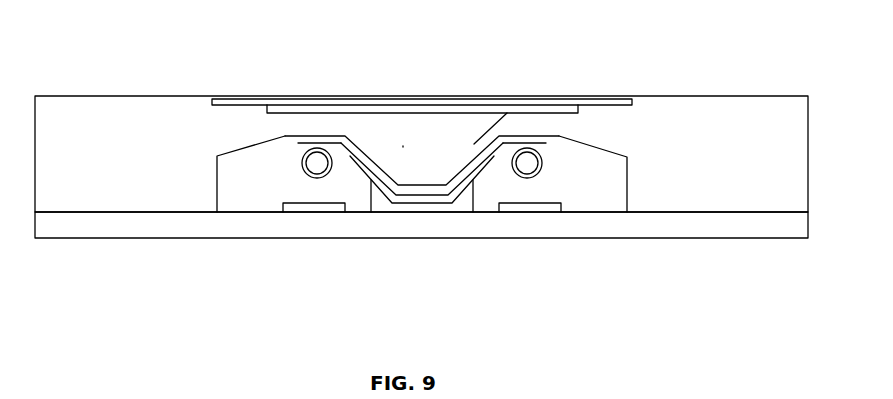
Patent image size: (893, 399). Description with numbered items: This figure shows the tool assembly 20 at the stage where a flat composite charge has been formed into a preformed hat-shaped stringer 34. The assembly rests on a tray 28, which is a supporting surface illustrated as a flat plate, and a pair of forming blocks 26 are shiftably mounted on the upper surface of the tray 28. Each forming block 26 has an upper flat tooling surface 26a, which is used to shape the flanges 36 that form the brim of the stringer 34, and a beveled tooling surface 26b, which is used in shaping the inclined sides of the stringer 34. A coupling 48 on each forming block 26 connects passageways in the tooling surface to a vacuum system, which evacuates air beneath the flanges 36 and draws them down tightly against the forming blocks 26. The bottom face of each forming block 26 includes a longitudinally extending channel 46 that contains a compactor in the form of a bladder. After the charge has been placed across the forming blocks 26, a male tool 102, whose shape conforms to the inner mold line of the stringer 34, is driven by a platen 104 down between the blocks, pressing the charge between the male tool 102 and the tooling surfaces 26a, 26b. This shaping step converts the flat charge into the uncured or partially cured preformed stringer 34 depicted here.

The tool assembly 20 is at (122, 134).
The forming block 26 is at (242, 172).
The upper flat tooling surface 26a is at (330, 140).
The beveled tooling surface 26b is at (355, 159).
The tray 28 is at (73, 227).
The hat-shaped stringer 34 is at (386, 184).
The flange 36 is at (318, 147).
The longitudinally extending channel 46 is at (297, 206).
The coupling 48 is at (307, 151).
The male tool 102 is at (405, 148).
The platen 104 is at (581, 98).